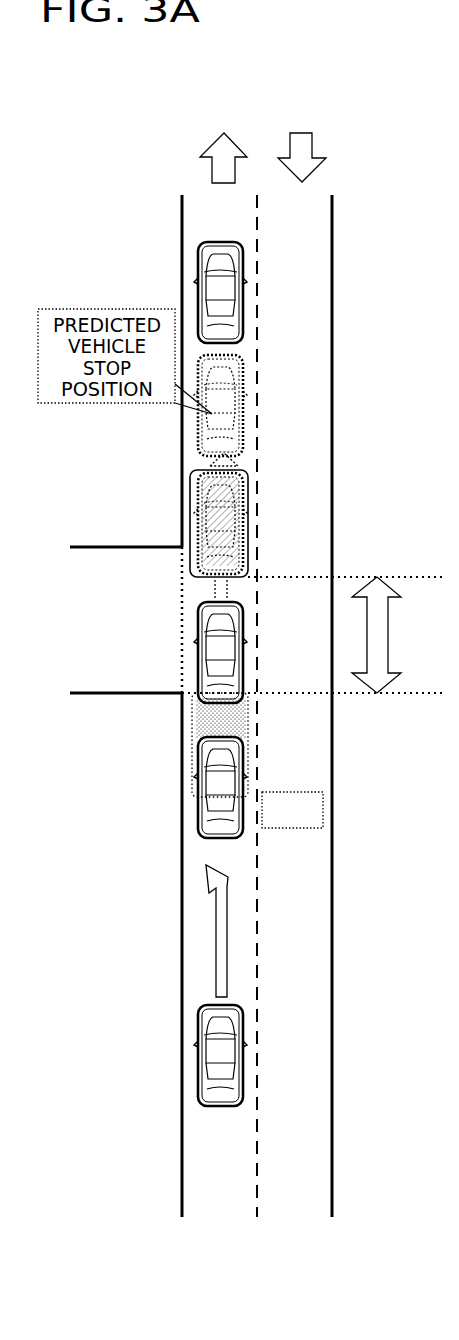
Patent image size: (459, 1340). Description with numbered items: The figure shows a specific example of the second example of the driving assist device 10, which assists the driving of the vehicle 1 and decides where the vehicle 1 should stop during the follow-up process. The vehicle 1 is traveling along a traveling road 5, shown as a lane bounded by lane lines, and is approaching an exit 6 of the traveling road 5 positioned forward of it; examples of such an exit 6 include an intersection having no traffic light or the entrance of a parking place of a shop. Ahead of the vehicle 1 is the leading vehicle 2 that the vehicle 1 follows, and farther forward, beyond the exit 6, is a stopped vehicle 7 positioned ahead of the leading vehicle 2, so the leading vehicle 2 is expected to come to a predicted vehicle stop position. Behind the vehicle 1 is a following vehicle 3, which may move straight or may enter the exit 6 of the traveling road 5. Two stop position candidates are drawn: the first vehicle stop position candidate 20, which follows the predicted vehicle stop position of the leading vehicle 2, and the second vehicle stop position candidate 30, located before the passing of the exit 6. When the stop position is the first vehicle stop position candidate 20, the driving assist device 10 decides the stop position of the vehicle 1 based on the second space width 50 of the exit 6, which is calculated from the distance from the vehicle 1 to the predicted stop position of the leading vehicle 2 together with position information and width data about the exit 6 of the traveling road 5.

The vehicle 1 is at (238, 520).
The leading vehicle 2 is at (200, 410).
The following vehicle 3 is at (200, 1050).
The traveling road 5 is at (182, 1152).
The exit of the traveling road 6 is at (180, 572).
The stopped vehicle 7 is at (200, 284).
The driving assist device 10 is at (222, 798).
The first vehicle stop position candidate 20 is at (193, 497).
The second vehicle stop position candidate 30 is at (242, 722).
The second space width 50 is at (388, 628).